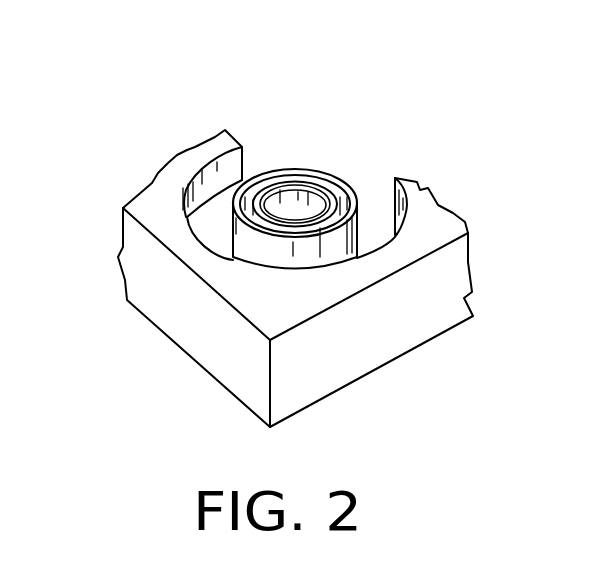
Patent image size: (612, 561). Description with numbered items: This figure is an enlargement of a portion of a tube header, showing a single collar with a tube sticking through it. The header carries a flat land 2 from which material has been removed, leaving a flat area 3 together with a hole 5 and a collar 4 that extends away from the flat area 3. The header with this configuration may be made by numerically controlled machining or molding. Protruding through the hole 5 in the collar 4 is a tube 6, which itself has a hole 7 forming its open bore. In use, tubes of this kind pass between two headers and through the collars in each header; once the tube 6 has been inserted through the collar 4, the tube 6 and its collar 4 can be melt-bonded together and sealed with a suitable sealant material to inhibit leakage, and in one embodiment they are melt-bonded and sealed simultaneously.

The flat land 2 is at (180, 165).
The flat area 3 is at (208, 220).
The collar 4 is at (352, 197).
The hole 5 is at (340, 187).
The tube 6 is at (280, 193).
The hole 7 is at (307, 197).